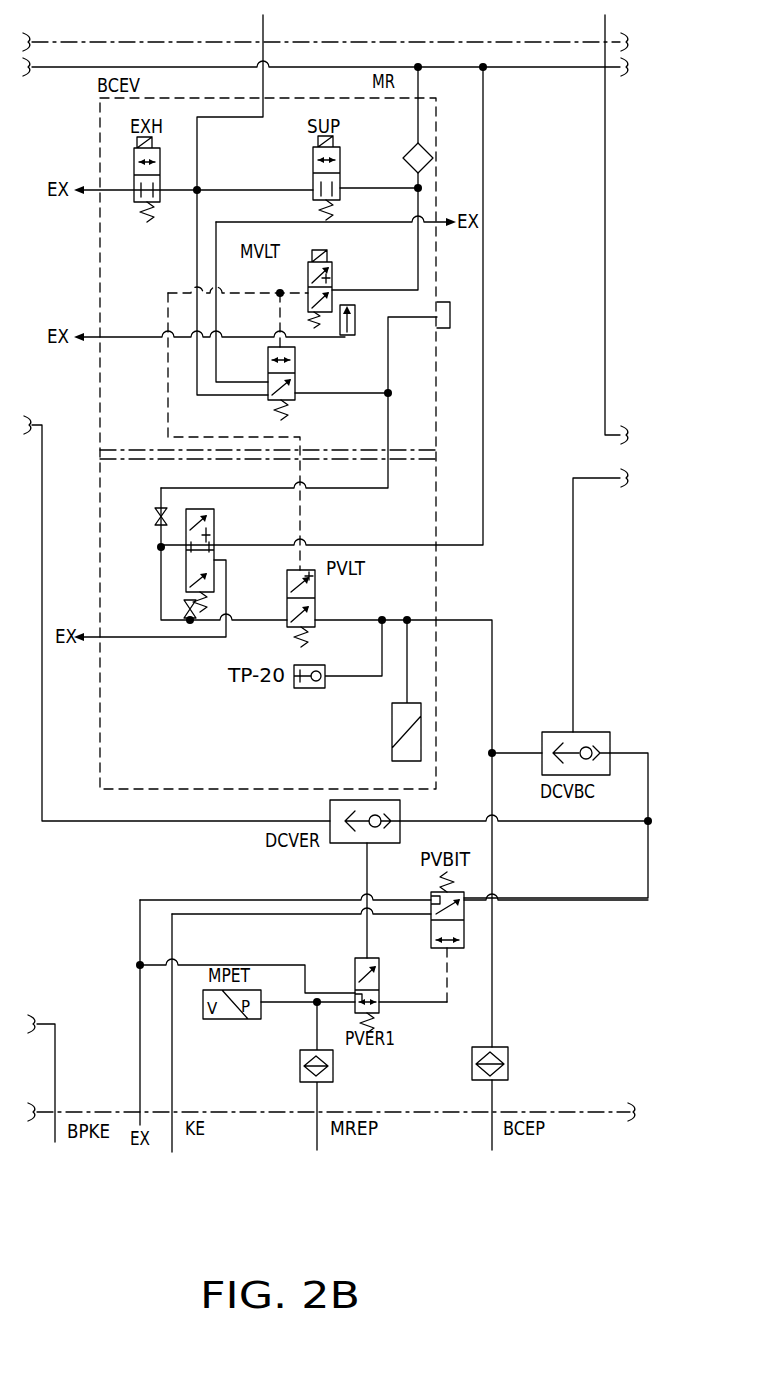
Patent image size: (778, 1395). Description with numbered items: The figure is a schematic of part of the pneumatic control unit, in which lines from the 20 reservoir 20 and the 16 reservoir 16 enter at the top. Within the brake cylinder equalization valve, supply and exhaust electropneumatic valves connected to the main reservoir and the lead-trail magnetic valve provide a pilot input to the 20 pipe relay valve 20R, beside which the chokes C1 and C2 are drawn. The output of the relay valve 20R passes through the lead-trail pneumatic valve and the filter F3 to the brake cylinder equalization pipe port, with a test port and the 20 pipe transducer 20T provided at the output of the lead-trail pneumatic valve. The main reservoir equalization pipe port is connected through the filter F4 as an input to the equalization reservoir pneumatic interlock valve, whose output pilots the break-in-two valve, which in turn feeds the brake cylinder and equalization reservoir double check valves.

The 16 reservoir 16 is at (640, 227).
The 20 reservoir 20 is at (264, 203).
The 20 pipe relay valve 20R is at (180, 552).
The 20 pipe transducer 20T is at (406, 700).
The choke C1 is at (141, 517).
The choke C2 is at (180, 606).
The filter F3 is at (508, 1064).
The filter F4 is at (333, 1076).